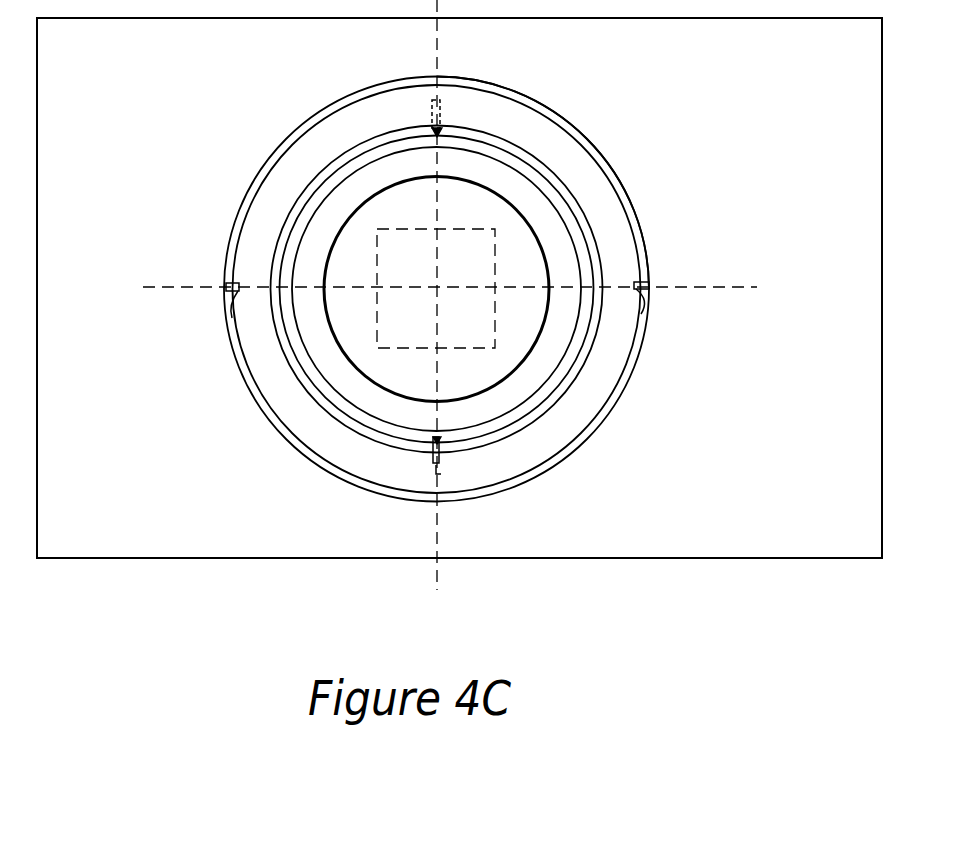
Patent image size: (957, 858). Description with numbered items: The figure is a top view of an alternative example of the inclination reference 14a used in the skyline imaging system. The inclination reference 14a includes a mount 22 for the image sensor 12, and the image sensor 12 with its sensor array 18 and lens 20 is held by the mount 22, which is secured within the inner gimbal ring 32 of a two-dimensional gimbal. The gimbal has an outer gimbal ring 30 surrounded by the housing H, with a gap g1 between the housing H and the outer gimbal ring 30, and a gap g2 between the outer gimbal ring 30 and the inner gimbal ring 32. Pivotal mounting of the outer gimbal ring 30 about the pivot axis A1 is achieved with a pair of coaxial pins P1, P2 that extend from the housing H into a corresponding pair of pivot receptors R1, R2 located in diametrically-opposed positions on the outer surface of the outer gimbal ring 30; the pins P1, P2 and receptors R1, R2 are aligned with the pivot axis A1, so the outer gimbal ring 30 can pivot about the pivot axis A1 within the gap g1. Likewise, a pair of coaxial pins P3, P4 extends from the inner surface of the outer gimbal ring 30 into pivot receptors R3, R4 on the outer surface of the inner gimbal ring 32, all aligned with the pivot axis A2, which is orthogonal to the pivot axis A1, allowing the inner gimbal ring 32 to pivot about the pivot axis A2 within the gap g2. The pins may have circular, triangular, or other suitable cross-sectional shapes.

The image sensor 12 is at (336, 243).
The inclination reference 14a is at (285, 428).
The sensor array 18 is at (480, 342).
The lens 20 is at (490, 386).
The mount 22 is at (347, 193).
The outer gimbal ring 30 is at (537, 132).
The inner gimbal ring 32 is at (567, 185).
The gap g1 is at (622, 386).
The gap g2 is at (540, 421).
The housing H is at (734, 486).
The pivot axis A1 is at (712, 283).
The pivot axis A2 is at (432, 47).
The coaxial pin P1 is at (641, 283).
The coaxial pin P2 is at (228, 285).
The coaxial pin P3 is at (435, 440).
The coaxial pin P4 is at (437, 100).
The pivot receptor R1 is at (641, 300).
The pivot receptor R2 is at (233, 300).
The pivot receptor R3 is at (440, 440).
The pivot receptor R4 is at (438, 133).